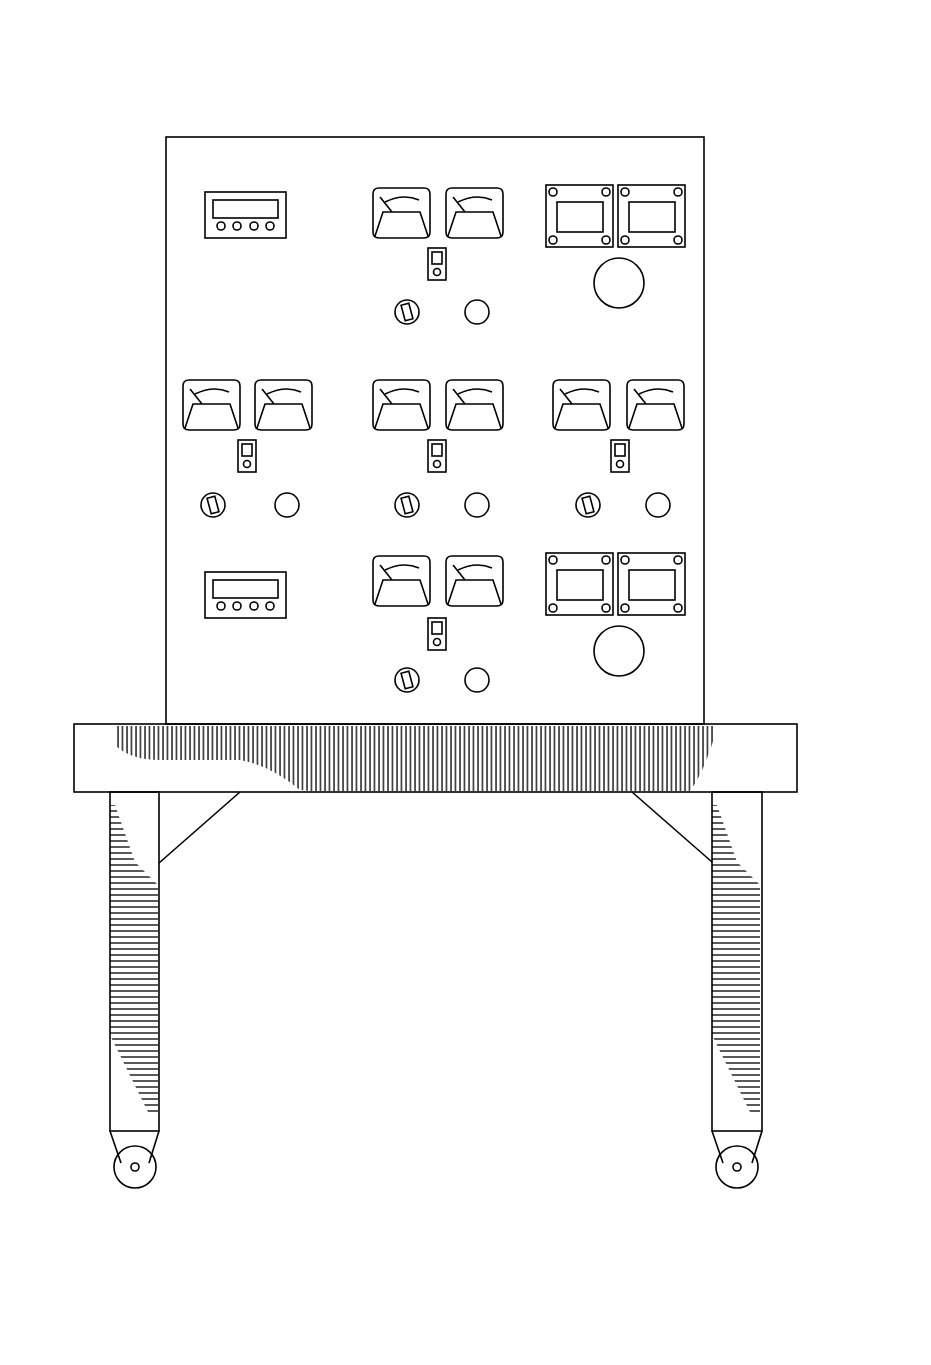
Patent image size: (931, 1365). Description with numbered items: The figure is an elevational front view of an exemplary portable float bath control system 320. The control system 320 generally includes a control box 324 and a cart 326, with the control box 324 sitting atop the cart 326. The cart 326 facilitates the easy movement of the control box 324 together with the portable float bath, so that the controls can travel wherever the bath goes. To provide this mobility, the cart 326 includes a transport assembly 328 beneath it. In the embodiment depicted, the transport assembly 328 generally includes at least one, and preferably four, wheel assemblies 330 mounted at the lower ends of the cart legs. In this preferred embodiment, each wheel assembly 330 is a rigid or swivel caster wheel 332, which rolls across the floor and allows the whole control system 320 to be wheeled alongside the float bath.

The portable float bath control system 320 is at (257, 72).
The control box 324 is at (165, 352).
The cart 326 is at (73, 695).
The transport assembly 328 is at (70, 1097).
The wheel assembly 330 is at (205, 1131).
The caster wheel 332 is at (160, 1192).